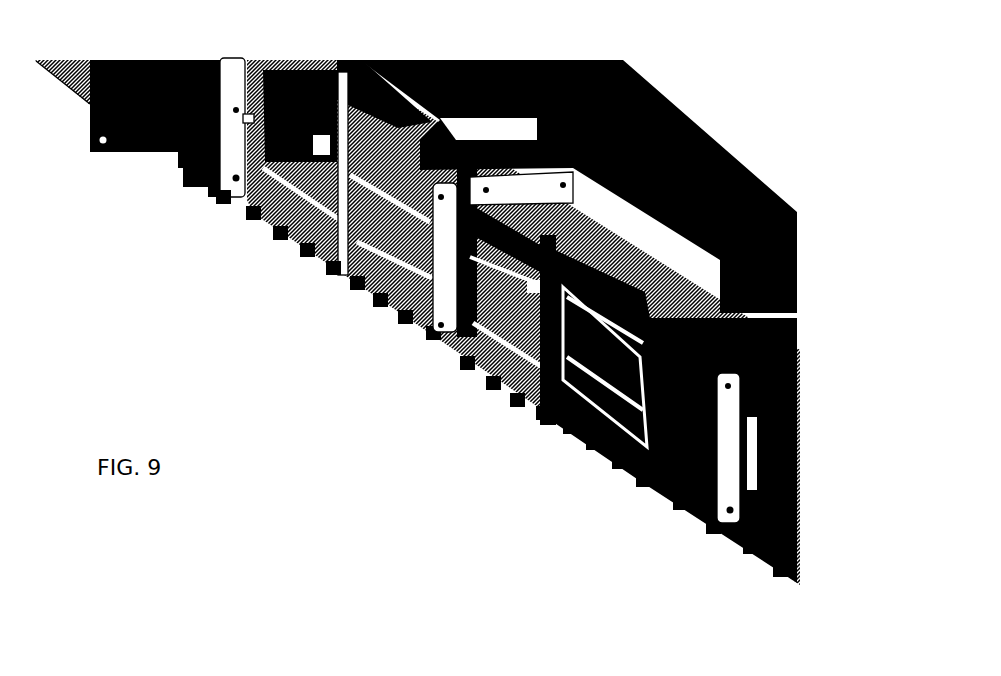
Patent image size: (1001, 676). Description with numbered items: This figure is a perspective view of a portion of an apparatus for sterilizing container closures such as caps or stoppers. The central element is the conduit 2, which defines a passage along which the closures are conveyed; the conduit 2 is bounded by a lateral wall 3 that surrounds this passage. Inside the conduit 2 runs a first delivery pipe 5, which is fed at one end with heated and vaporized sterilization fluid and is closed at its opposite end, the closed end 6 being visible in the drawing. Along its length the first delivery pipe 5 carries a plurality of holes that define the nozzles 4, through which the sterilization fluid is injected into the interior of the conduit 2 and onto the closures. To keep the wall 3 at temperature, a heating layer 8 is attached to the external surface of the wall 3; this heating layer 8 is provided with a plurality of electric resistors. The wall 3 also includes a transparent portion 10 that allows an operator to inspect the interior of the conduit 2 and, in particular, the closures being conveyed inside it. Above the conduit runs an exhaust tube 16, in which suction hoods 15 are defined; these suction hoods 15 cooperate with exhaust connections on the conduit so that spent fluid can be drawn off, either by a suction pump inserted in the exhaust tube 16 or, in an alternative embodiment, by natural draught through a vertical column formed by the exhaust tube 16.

The conduit 2 is at (486, 396).
The wall 3 is at (252, 197).
The nozzles 4 is at (307, 252).
The first delivery pipe 5 is at (257, 225).
The closed end 6 is at (370, 290).
The heating layer 8 is at (523, 402).
The transparent portion 10 is at (457, 347).
The suction hoods 15 is at (553, 417).
The exhaust tube 16 is at (652, 113).